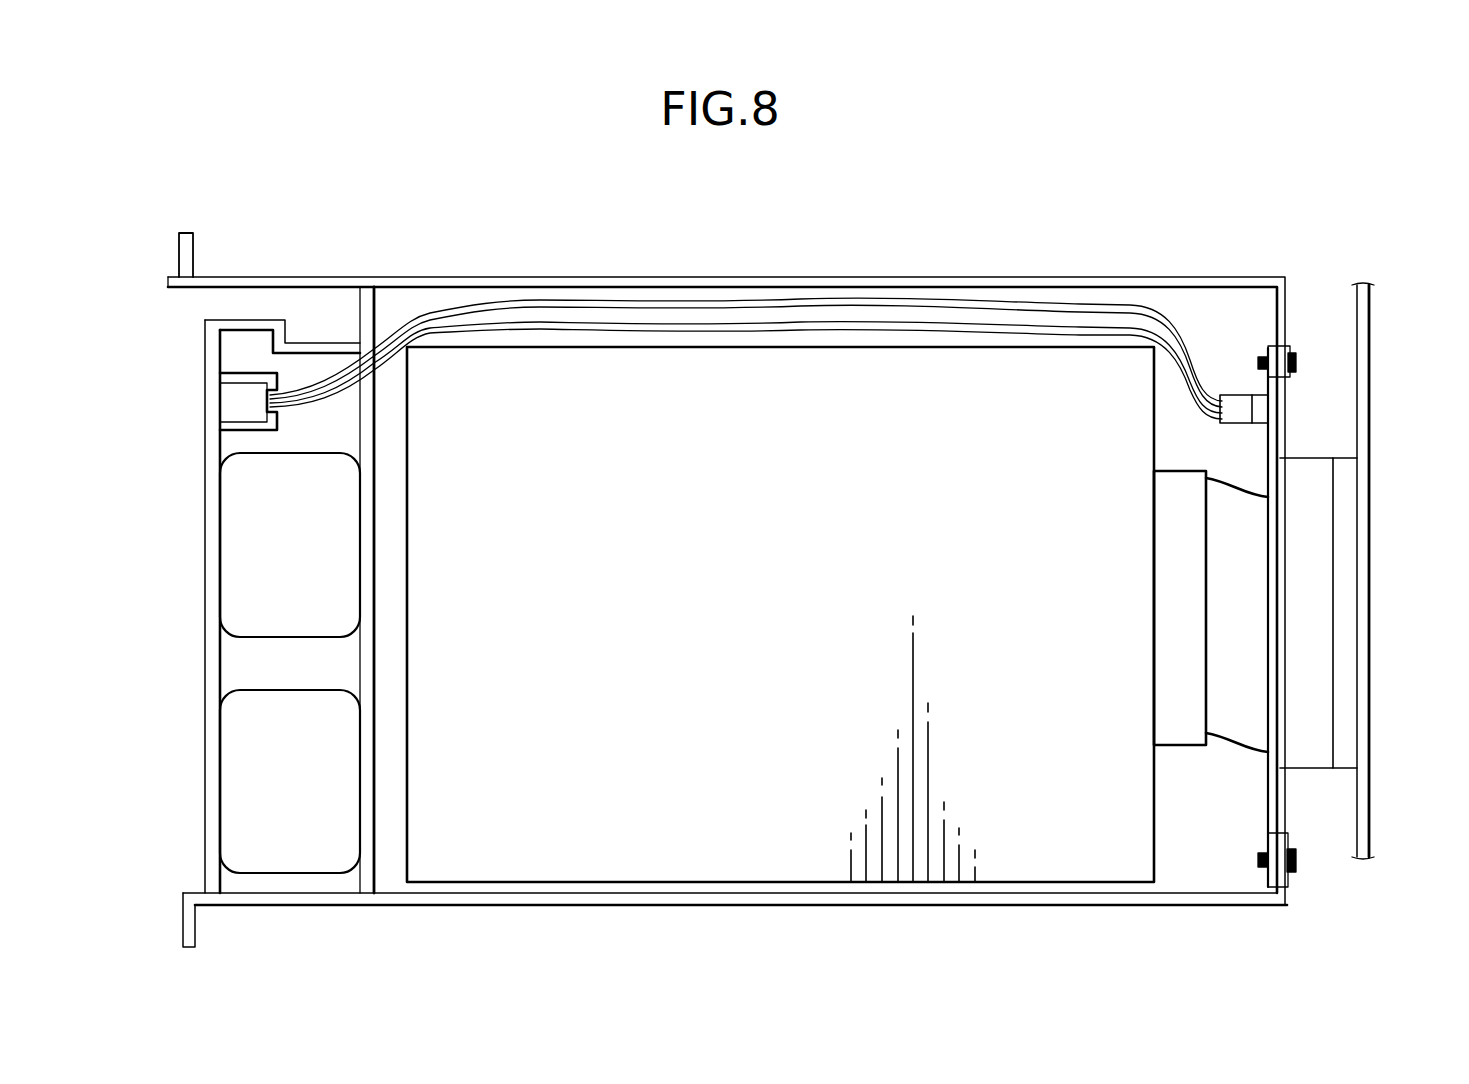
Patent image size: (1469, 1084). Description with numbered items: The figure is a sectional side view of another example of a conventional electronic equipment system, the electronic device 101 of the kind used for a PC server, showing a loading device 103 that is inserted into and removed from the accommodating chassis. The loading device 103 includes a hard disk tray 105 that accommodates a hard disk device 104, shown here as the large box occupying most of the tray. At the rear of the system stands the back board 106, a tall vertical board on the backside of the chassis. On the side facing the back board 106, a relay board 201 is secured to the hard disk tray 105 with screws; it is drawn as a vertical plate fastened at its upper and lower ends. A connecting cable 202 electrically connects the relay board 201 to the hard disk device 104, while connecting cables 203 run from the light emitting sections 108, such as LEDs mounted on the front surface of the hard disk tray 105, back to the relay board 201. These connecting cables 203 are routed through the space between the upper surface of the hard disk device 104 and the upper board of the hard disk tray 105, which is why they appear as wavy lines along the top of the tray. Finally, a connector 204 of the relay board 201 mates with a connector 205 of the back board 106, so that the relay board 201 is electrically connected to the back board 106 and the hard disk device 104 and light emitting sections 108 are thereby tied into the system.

The electronic device 101 is at (1296, 223).
The loading device 103 is at (162, 228).
The hard disk device 104 is at (688, 884).
The hard disk tray 105 is at (262, 907).
The back board 106 is at (1372, 357).
The light emitting sections 108 is at (220, 403).
The relay board 201 is at (1275, 808).
The connecting cable 202 is at (1228, 738).
The connecting cables 203 is at (1027, 302).
The connector 204 is at (1320, 630).
The connector 205 is at (1345, 568).